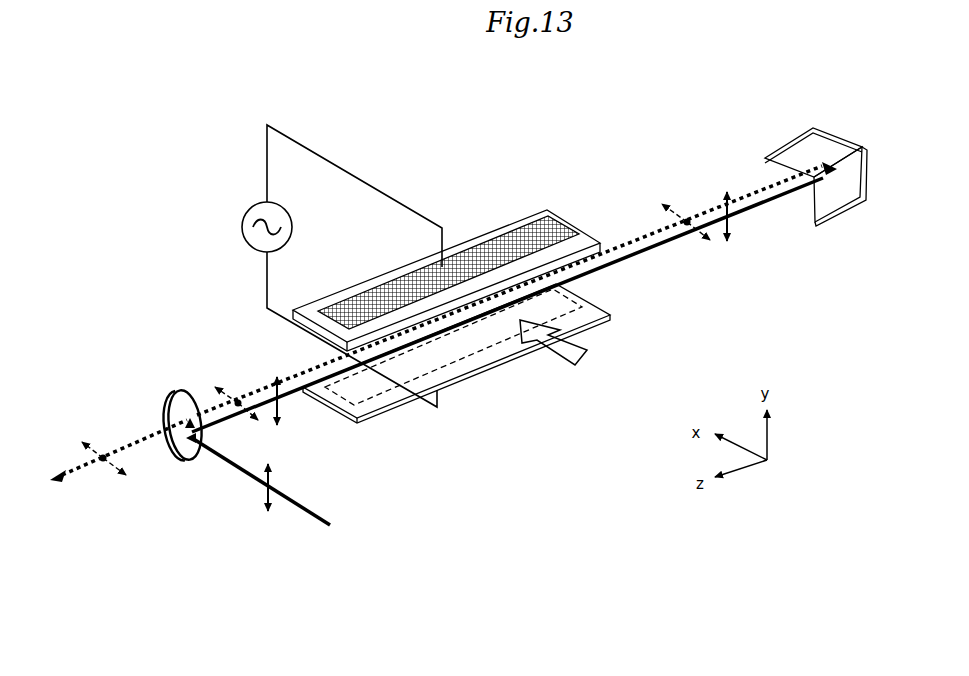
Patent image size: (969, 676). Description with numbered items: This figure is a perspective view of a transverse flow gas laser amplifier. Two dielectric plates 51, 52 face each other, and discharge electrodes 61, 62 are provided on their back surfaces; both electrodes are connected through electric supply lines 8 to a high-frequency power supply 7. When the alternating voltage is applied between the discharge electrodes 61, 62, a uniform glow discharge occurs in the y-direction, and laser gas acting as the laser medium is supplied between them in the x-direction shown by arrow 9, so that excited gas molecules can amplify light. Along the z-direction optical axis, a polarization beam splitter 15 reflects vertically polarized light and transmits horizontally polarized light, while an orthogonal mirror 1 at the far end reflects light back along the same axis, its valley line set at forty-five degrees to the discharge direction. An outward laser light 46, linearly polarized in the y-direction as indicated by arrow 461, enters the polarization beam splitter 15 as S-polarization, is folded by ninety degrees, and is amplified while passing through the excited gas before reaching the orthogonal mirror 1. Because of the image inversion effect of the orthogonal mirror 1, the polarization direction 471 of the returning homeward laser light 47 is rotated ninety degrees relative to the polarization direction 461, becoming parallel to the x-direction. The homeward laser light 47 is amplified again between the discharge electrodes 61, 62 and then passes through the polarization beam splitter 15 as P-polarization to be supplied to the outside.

The orthogonal mirror 1 is at (813, 128).
The high-frequency power supply 7 is at (243, 212).
The electric supply lines 8 is at (320, 152).
The arrow 9 is at (590, 353).
The polarization beam splitter 15 is at (175, 390).
The outward laser light 46 is at (302, 518).
The polarization direction 461 is at (267, 520).
The homeward laser light 47 is at (75, 470).
The polarization direction 471 is at (113, 473).
The dielectric plate 51 is at (500, 220).
The dielectric plate 52 is at (403, 413).
The discharge electrode 61 is at (548, 222).
The discharge electrode 62 is at (372, 404).